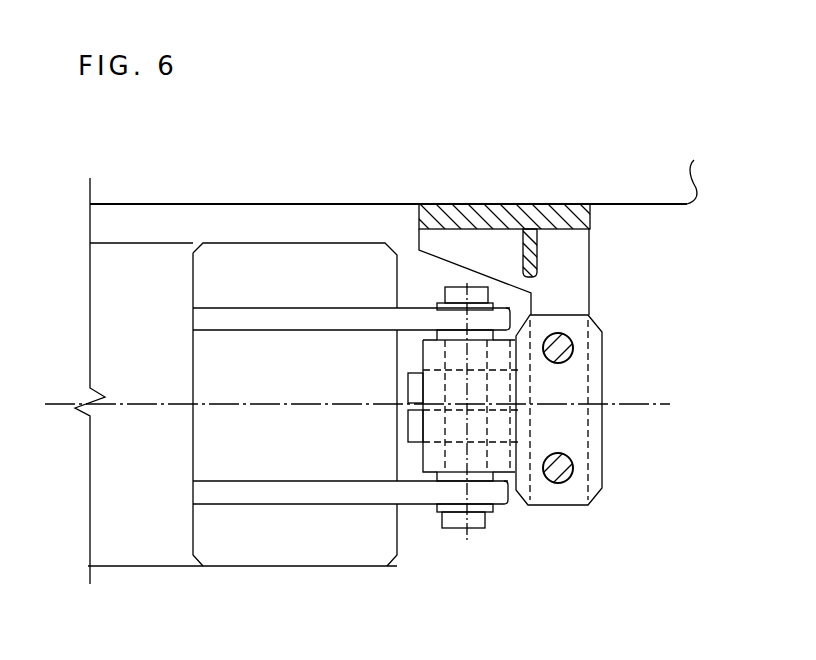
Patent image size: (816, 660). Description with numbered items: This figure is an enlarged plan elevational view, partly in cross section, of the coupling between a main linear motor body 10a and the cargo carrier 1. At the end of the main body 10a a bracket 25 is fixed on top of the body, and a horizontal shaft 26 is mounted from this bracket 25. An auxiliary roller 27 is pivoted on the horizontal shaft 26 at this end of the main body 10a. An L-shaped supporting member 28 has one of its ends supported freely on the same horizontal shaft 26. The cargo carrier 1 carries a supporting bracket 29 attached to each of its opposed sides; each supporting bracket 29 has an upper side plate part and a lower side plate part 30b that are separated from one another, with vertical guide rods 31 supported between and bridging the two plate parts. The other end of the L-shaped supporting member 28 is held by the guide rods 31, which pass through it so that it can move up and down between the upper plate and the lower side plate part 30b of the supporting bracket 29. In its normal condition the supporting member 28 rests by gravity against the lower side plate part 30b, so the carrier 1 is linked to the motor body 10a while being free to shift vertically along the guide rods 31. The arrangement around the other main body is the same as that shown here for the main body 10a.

The cargo carrier 1 is at (676, 207).
The main linear motor body 10a is at (150, 267).
The bracket 25 is at (315, 502).
The horizontal shaft 26 is at (473, 527).
The auxiliary roller 27 is at (413, 430).
The L-shaped supporting member 28 is at (577, 435).
The supporting bracket 29 is at (544, 209).
The lower side plate part 30b is at (568, 273).
The vertical guide rods 31 is at (574, 348).